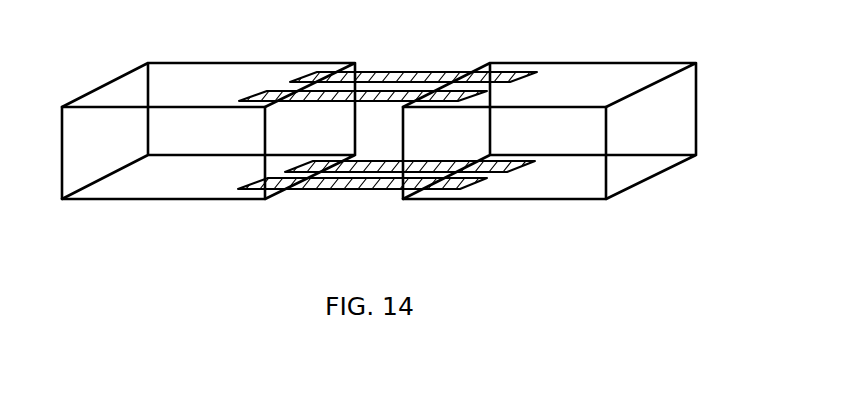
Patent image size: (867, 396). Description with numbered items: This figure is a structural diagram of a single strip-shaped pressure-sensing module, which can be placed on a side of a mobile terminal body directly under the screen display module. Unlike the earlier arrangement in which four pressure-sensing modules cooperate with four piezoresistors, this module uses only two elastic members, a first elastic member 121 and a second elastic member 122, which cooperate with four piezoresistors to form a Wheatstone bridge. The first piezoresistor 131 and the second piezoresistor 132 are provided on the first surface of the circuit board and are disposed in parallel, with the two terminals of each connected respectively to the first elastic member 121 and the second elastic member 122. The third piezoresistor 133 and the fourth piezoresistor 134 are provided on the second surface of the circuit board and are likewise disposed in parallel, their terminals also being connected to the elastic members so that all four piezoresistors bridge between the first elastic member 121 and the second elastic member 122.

The first elastic member 121 is at (144, 86).
The second elastic member 122 is at (600, 80).
The first piezoresistor 131 is at (424, 78).
The second piezoresistor 132 is at (348, 98).
The third piezoresistor 133 is at (391, 168).
The fourth piezoresistor 134 is at (335, 185).